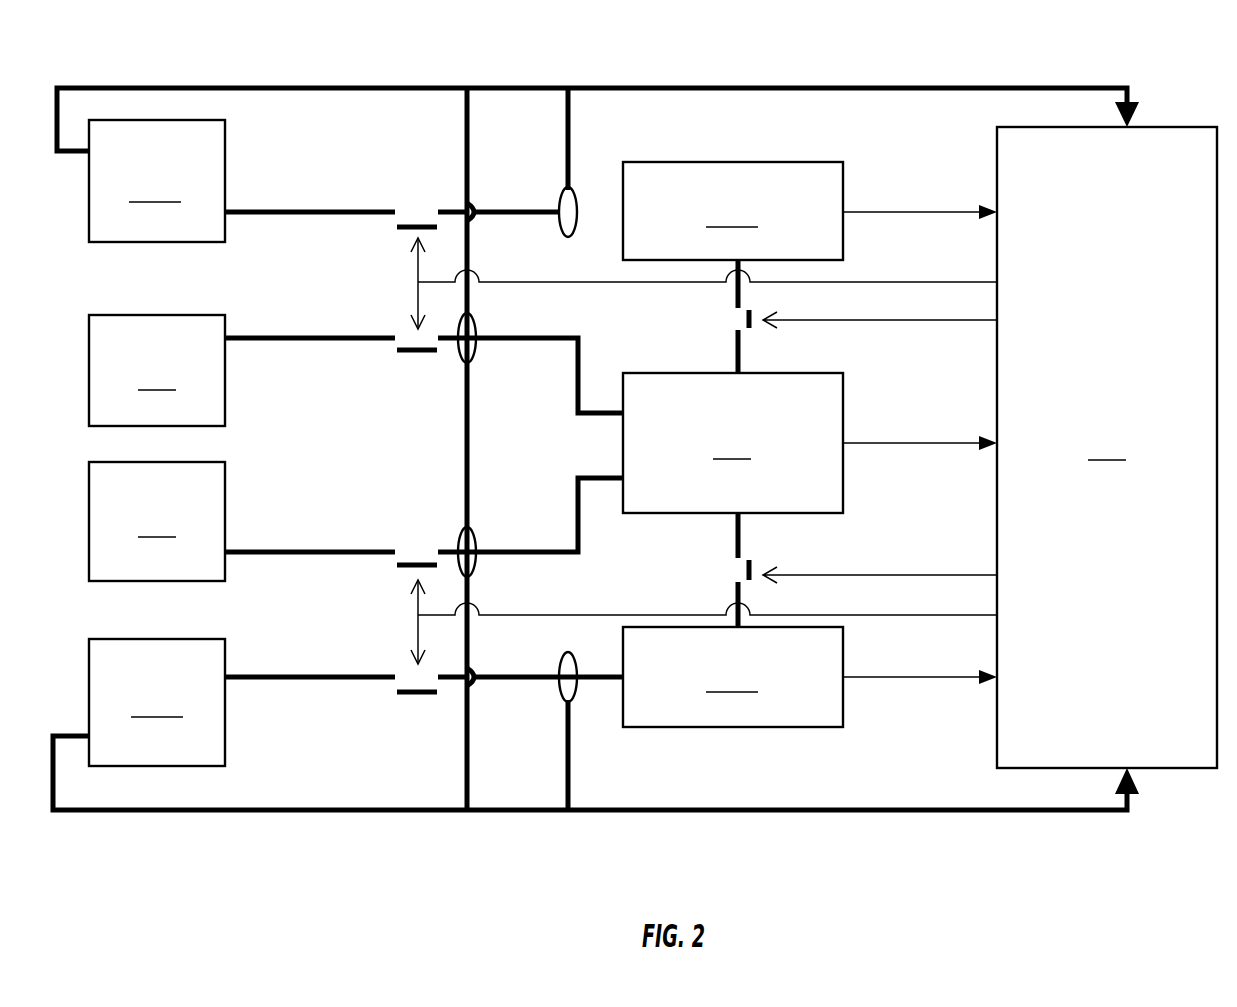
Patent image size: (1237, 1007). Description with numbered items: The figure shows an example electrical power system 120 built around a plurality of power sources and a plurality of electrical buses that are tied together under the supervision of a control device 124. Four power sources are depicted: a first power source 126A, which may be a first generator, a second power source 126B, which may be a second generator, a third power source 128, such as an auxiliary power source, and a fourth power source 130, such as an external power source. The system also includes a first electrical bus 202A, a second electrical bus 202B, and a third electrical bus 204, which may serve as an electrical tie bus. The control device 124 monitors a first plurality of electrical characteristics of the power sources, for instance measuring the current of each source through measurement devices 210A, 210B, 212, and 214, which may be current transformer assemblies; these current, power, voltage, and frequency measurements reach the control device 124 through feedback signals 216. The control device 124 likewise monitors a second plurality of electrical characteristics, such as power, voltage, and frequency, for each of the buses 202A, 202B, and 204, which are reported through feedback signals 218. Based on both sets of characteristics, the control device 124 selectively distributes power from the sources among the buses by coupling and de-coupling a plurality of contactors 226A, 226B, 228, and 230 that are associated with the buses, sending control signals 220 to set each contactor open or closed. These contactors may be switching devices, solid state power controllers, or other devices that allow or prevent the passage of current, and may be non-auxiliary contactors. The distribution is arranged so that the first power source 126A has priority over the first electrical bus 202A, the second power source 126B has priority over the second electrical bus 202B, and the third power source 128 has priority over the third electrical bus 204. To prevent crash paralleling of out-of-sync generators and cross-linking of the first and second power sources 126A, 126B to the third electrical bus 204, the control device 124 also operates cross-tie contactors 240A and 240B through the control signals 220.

The electrical power system 120 is at (219, 73).
The control device 124 is at (1107, 447).
The first power source 126A is at (242, 181).
The second power source 126B is at (242, 702).
The third power source 128 is at (242, 370).
The fourth power source 130 is at (242, 521).
The first electrical bus 202A is at (733, 211).
The second electrical bus 202B is at (733, 677).
The third electrical bus 204 is at (733, 443).
The measurement device 210A is at (561, 195).
The measurement device 210B is at (561, 702).
The measurement device 212 is at (477, 360).
The measurement device 214 is at (477, 570).
The feedback signal 216 is at (762, 88).
The feedback signal 218 is at (867, 212).
The control signal 220 is at (872, 282).
The contactor 226A is at (413, 197).
The contactor 226B is at (412, 716).
The contactor 228 is at (412, 364).
The contactor 230 is at (413, 537).
The cross-tie contactor 240A is at (732, 317).
The cross-tie contactor 240B is at (732, 567).